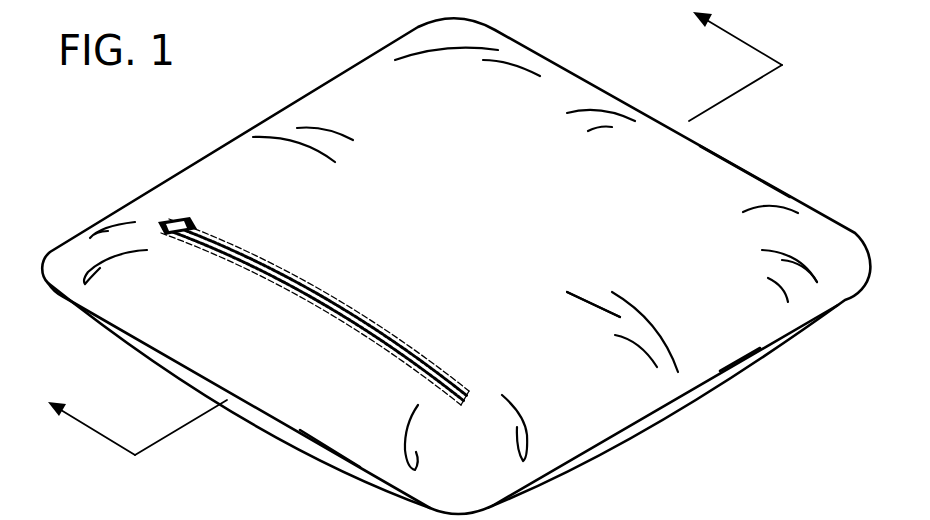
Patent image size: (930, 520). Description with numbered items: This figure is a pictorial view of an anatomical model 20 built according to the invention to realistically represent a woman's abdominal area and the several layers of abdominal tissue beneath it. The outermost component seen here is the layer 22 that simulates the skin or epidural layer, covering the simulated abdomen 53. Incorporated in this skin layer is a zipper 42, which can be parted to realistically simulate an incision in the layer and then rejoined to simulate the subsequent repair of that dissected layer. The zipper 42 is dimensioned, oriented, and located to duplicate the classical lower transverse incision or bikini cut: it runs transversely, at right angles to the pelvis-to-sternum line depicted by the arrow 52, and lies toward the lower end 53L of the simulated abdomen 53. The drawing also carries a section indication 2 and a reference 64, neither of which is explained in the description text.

The anatomical model 20 is at (176, 153).
The skin or epidural layer component 22 is at (752, 177).
The zipper 42 is at (323, 303).
The arrow 52 is at (500, 220).
The simulated abdomen 53 is at (534, 337).
The lower end of the simulated abdomen 53L is at (353, 435).
The base 64 is at (756, 434).
The section line of FIG. 2 is at (402, 227).